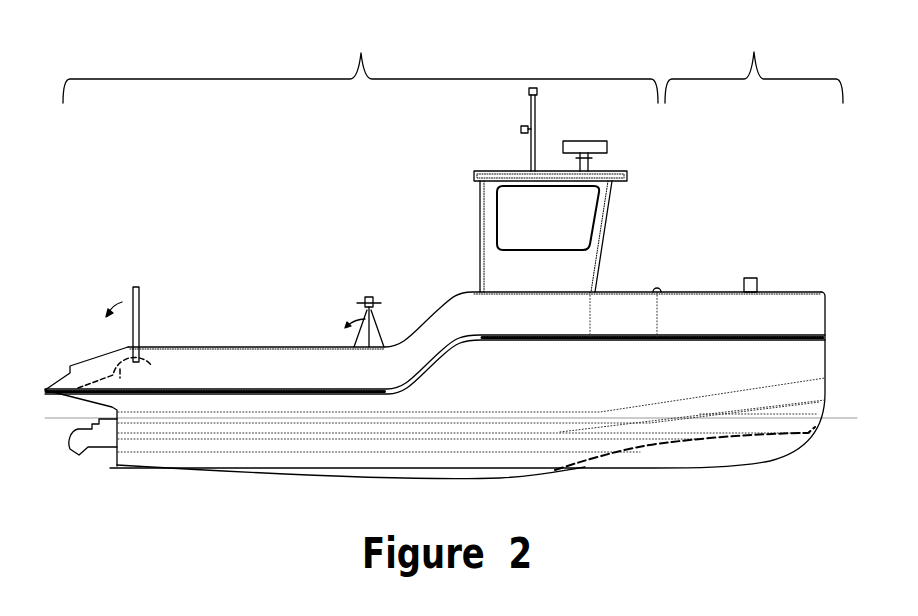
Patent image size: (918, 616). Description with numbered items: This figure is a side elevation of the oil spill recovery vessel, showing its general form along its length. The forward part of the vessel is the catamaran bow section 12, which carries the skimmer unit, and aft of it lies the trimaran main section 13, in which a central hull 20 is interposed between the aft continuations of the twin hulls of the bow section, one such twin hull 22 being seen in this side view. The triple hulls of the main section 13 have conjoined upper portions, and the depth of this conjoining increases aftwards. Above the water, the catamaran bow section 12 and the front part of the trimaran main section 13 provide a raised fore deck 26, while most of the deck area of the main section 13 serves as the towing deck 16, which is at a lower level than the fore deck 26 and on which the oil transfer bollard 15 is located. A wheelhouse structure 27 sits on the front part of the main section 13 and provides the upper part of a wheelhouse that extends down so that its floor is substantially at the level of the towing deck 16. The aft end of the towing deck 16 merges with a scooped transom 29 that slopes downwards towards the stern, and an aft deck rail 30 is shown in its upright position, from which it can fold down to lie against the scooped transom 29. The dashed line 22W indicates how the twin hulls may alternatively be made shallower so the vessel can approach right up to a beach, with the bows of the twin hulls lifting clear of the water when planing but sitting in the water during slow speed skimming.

The catamaran bow section 12 is at (754, 64).
The trimaran main section 13 is at (360, 64).
The oil transfer bollard 15 is at (368, 298).
The towing deck 16 is at (250, 334).
The central hull 20 is at (517, 477).
The twin hull 22 is at (783, 410).
The dashed line 22W is at (675, 442).
The raised fore deck 26 is at (620, 278).
The wheelhouse structure 27 is at (480, 228).
The scooped transom 29 is at (108, 379).
The aft deck rail 30 is at (135, 292).